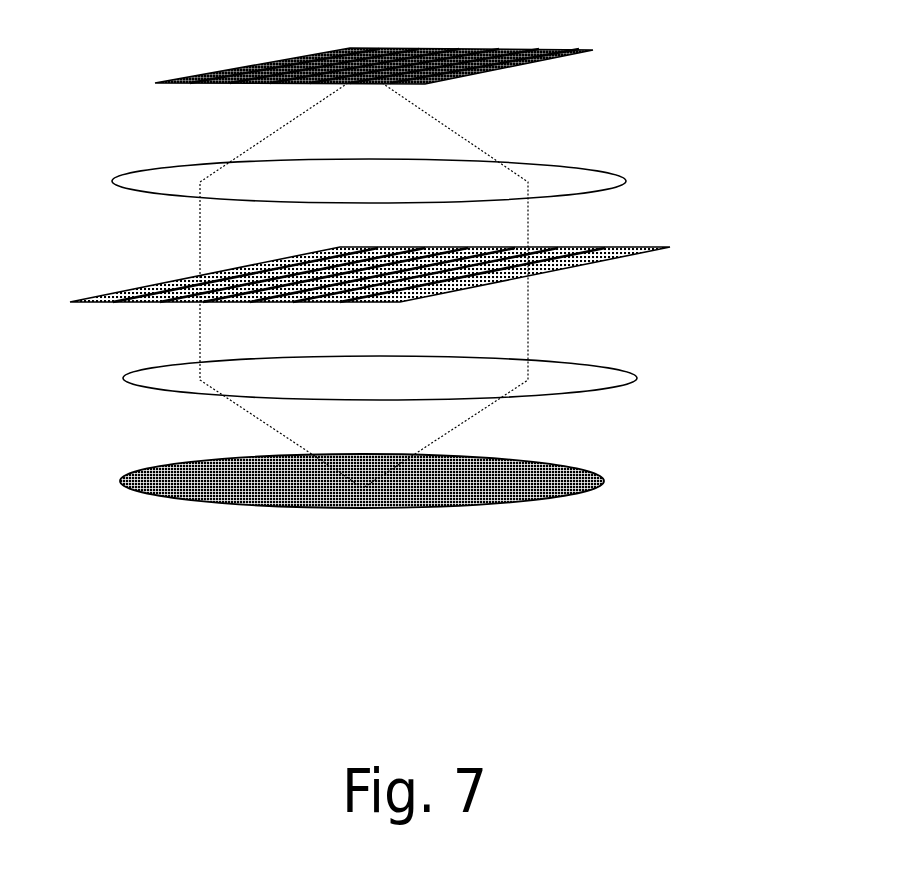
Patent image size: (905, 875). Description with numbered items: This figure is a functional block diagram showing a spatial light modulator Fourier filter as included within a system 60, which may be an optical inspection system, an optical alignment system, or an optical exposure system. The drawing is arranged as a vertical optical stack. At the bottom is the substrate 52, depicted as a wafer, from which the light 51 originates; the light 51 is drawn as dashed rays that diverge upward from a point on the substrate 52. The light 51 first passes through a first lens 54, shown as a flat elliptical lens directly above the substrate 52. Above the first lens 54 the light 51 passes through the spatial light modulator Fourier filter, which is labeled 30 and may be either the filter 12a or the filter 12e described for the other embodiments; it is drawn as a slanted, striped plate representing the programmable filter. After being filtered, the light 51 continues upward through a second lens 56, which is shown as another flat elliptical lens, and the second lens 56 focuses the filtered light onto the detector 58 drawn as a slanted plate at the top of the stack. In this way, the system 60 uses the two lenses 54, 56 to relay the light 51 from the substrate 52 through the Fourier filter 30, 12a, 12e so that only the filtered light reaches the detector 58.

The detector 58 is at (567, 52).
The second lens 56 is at (603, 181).
The SLM Fourier filter 30 is at (475, 295).
The spatial light modulator Fourier filter 12a is at (475, 293).
The spatial light modulator Fourier filter 12e is at (597, 255).
The first lens 54 is at (635, 378).
The light 51 is at (265, 420).
The substrate 52 is at (587, 485).
The system 60 is at (462, 312).